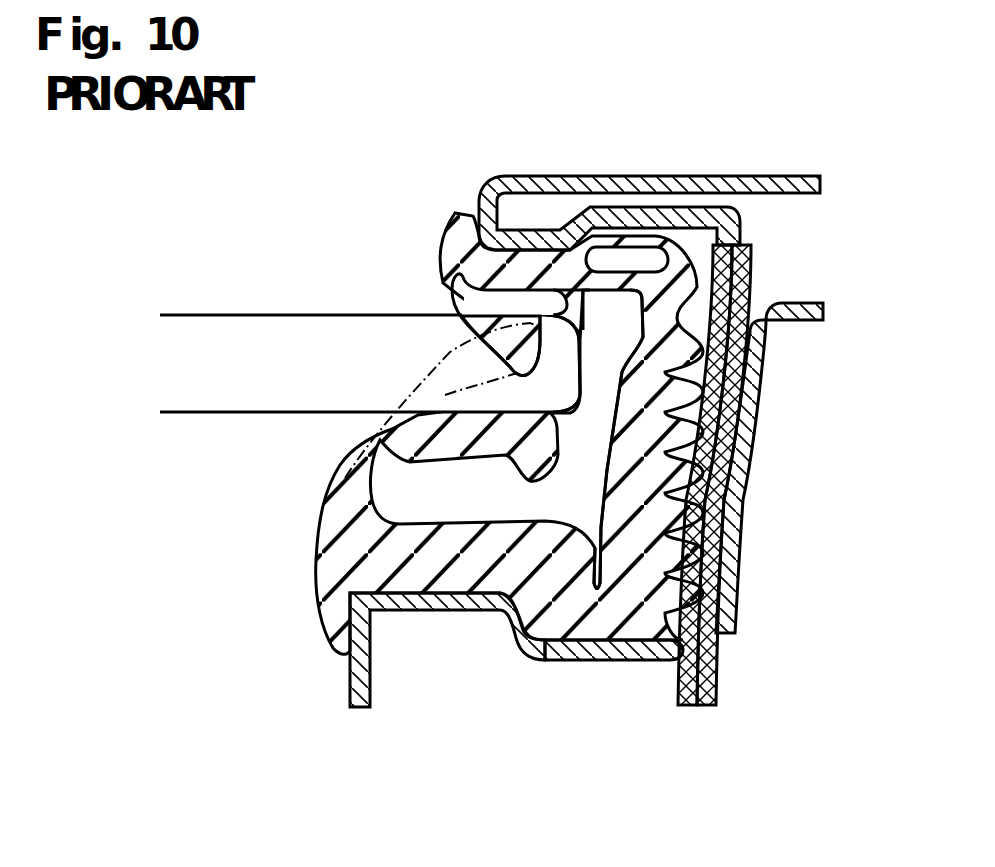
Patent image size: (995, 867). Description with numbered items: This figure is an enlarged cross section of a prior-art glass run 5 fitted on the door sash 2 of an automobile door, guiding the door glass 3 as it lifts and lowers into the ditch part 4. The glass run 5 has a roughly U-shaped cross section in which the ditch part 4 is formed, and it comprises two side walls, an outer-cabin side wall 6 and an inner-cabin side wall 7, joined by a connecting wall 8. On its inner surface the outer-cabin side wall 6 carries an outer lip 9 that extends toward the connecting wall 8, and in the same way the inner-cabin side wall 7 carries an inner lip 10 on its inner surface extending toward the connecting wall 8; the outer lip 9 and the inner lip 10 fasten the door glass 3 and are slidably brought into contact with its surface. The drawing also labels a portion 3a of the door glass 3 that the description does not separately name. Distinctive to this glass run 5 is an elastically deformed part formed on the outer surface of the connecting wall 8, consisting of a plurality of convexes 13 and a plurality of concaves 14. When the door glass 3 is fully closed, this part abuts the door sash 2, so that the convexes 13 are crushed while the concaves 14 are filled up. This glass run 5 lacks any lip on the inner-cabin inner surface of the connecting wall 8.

The door sash 2 is at (607, 661).
The door glass 3 is at (320, 313).
The edge portion of window glass 3a is at (578, 288).
The ditch part 4 is at (597, 471).
The glass run 5 is at (279, 549).
The outer-cabin side wall 6 is at (497, 193).
The inner-cabin side wall 7 is at (473, 572).
The connecting wall 8 is at (653, 330).
The outer lip 9 is at (438, 264).
The inner lip 10 is at (347, 456).
The convexes 13 is at (700, 357).
The concaves 14 is at (690, 377).